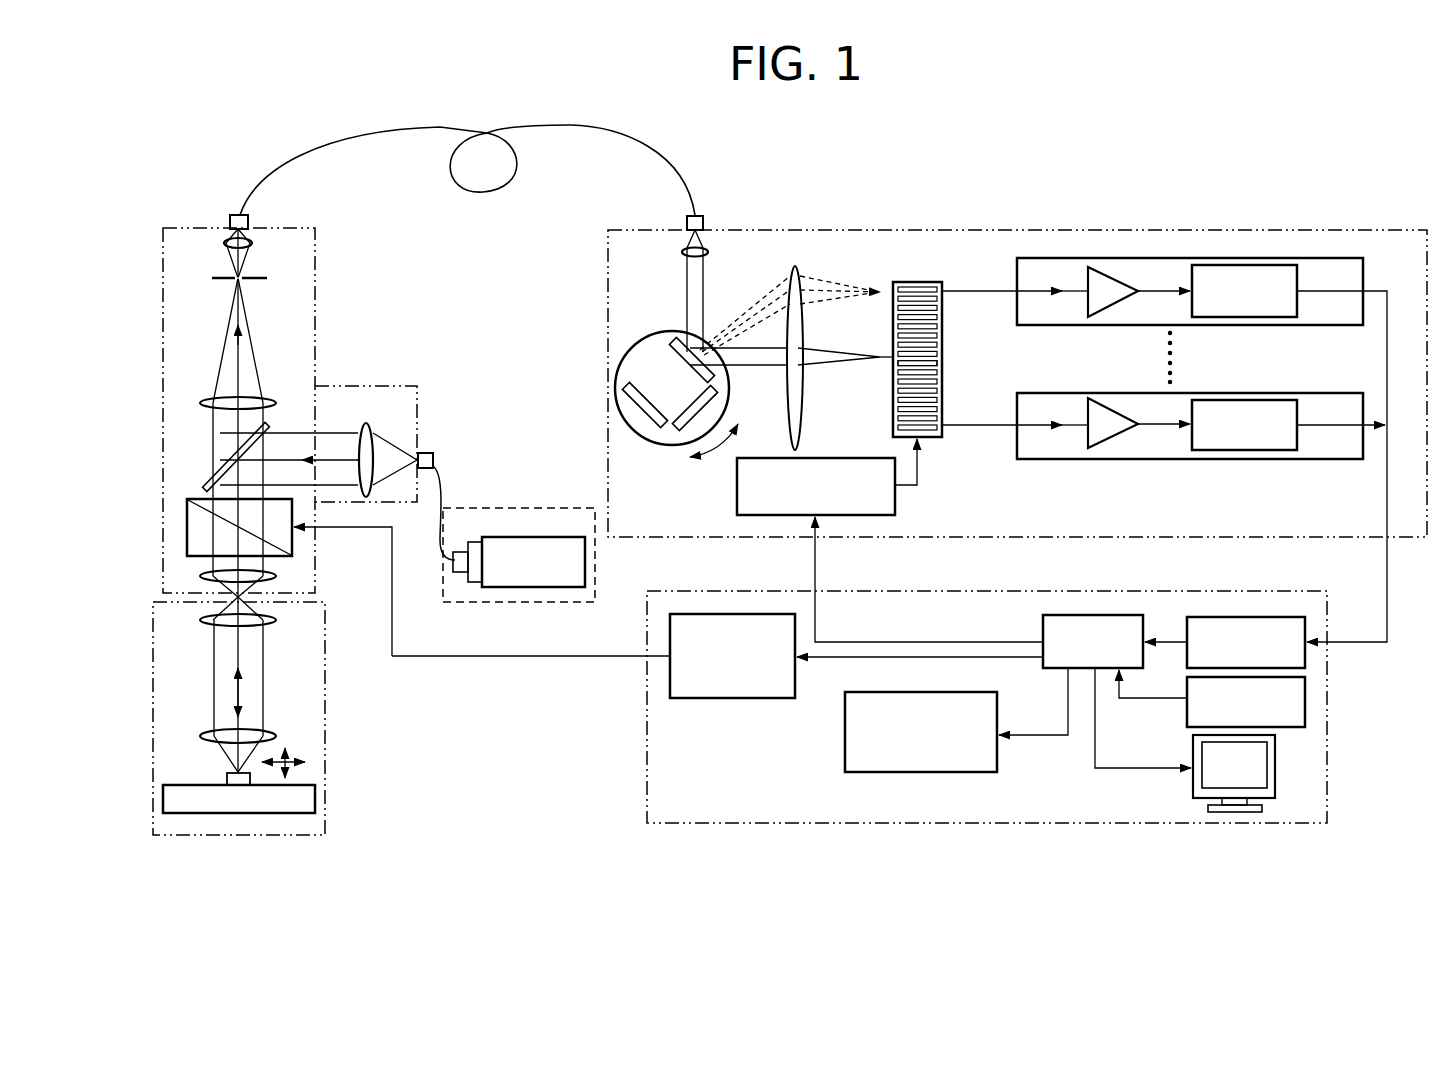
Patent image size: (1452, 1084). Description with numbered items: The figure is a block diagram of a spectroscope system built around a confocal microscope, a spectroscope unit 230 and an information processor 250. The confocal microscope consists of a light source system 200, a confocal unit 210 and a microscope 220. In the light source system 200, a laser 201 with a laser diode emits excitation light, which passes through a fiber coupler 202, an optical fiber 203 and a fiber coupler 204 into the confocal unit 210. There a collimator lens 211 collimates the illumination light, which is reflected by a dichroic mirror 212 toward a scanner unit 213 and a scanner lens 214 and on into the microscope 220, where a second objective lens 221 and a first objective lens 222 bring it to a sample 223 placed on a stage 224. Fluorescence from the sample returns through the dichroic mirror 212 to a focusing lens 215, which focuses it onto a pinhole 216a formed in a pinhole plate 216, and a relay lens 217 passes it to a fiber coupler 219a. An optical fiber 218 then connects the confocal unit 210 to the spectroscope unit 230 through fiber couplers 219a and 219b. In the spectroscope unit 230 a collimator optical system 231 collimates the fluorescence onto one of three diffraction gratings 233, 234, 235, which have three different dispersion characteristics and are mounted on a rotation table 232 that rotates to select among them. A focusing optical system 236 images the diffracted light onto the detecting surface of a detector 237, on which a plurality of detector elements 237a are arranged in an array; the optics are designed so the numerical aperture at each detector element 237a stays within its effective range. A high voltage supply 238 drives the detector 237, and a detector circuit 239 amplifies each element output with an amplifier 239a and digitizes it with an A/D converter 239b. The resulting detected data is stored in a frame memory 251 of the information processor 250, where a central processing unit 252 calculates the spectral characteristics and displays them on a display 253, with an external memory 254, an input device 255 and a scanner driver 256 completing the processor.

The light source system 200 is at (508, 602).
The laser 201 is at (552, 537).
The fiber coupler 202 is at (458, 583).
The optical fiber 203 is at (438, 467).
The fiber coupler 204 is at (433, 455).
The confocal unit 210 is at (175, 227).
The collimator lens 211 is at (407, 422).
The dichroic mirror 212 is at (208, 482).
The scanner unit 213 is at (292, 545).
The scanner lens 214 is at (277, 577).
The focusing lens 215 is at (270, 400).
The pinhole plate 216 is at (265, 278).
The pinhole 216a is at (240, 280).
The relay lens 217 is at (253, 243).
The optical fiber 218 is at (417, 128).
The fiber coupler 219a is at (240, 214).
The fiber coupler 219b is at (683, 218).
The microscope 220 is at (325, 677).
The second objective lens 221 is at (277, 620).
The first objective lens 222 is at (277, 735).
The sample 223 is at (225, 780).
The stage 224 is at (315, 793).
The spectroscope unit 230 is at (837, 228).
The collimator optical system 231 is at (683, 250).
The rotation table 232 is at (650, 380).
The diffraction grating 233 is at (616, 400).
The diffraction grating 234 is at (638, 396).
The diffraction grating 235 is at (675, 350).
The focusing optical system 236 is at (790, 267).
The detector 237 is at (910, 278).
The detector element 237a is at (942, 367).
The high voltage supply 238 is at (737, 485).
The detector circuit 239 is at (1348, 257).
The amplifier 239a is at (1117, 280).
The A/D converter 239b is at (1278, 265).
The information processor 250 is at (903, 590).
The frame memory 251 is at (1287, 617).
The central processing unit 252 is at (1043, 625).
The display 253 is at (1275, 773).
The external memory 254 is at (943, 772).
The input device 255 is at (1305, 695).
The scanner driver 256 is at (737, 700).